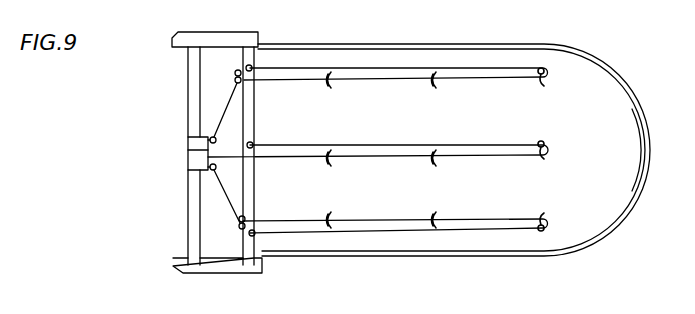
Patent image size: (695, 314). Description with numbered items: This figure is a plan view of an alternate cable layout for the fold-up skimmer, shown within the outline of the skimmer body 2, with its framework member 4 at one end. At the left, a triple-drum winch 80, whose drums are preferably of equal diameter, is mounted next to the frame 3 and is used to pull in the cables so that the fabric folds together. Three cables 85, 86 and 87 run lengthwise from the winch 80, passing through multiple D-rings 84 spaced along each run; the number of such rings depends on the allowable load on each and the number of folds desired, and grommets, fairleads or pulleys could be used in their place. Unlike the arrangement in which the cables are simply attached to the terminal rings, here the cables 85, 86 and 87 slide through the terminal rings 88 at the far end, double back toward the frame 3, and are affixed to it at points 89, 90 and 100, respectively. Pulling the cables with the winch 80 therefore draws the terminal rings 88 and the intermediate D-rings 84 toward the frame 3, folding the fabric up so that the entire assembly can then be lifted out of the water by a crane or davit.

The housing 2 is at (620, 195).
The frame 3 is at (190, 220).
The bottom plate 4 is at (212, 275).
The triple-drum winch 80 is at (188, 152).
The D-rings 84 is at (434, 150).
The cable 85 is at (347, 78).
The cable 86 is at (350, 160).
The cable 87 is at (398, 218).
The terminal rings 88 is at (548, 84).
The point 89 is at (251, 66).
The point 90 is at (254, 141).
The point 100 is at (255, 236).